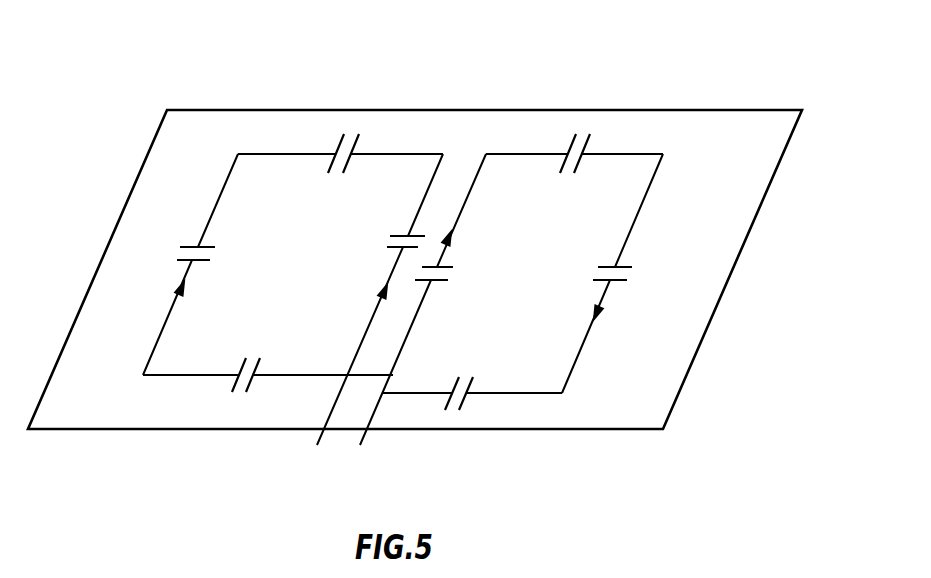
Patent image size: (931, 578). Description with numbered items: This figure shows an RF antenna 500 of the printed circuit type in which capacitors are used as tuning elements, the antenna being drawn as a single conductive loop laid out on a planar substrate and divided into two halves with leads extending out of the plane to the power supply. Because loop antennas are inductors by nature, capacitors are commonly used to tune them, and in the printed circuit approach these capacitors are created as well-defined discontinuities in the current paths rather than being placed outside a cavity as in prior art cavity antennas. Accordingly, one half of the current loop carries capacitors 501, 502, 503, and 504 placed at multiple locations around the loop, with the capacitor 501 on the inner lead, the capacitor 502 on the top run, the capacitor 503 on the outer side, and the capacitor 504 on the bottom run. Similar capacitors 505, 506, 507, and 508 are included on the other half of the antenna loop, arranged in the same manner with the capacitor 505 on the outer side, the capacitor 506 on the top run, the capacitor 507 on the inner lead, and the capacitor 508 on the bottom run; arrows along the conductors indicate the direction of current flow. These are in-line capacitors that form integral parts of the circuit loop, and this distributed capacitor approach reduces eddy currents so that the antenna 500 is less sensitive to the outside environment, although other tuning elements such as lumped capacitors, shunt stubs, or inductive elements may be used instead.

The capacitor circuit arrangement 500 is at (125, 80).
The capacitor 501 is at (447, 263).
The capacitor 502 is at (563, 162).
The capacitor 503 is at (631, 265).
The capacitor 504 is at (470, 383).
The capacitor 505 is at (193, 243).
The capacitor 506 is at (330, 160).
The capacitor 507 is at (401, 232).
The capacitor 508 is at (262, 368).